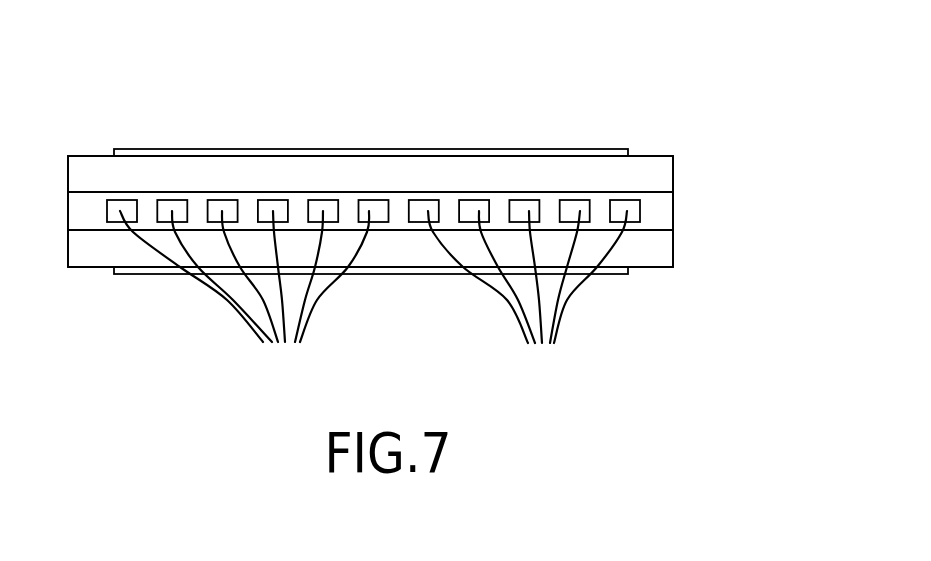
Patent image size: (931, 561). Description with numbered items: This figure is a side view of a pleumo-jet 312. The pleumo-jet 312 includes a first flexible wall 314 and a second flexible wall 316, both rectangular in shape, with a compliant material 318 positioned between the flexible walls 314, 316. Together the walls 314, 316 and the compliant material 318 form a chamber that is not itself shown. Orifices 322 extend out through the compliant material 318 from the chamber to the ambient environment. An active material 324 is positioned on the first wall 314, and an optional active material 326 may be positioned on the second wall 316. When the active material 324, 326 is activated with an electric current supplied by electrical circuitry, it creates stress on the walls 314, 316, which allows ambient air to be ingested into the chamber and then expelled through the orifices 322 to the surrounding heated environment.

The pleumo-jet 312 is at (655, 101).
The first flexible wall 314 is at (97, 175).
The second flexible wall 316 is at (102, 250).
The compliant material 318 is at (662, 217).
The orifices 322 is at (373, 296).
The active material 324 is at (568, 148).
The active material 326 is at (618, 275).